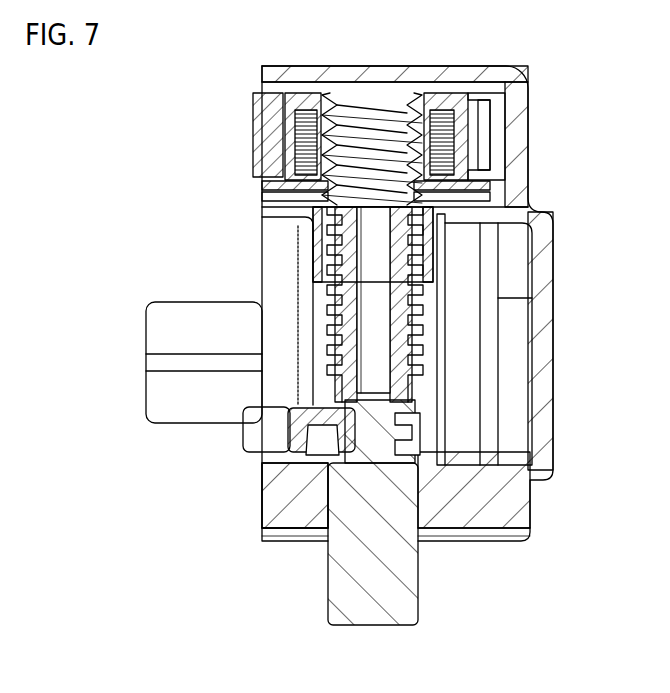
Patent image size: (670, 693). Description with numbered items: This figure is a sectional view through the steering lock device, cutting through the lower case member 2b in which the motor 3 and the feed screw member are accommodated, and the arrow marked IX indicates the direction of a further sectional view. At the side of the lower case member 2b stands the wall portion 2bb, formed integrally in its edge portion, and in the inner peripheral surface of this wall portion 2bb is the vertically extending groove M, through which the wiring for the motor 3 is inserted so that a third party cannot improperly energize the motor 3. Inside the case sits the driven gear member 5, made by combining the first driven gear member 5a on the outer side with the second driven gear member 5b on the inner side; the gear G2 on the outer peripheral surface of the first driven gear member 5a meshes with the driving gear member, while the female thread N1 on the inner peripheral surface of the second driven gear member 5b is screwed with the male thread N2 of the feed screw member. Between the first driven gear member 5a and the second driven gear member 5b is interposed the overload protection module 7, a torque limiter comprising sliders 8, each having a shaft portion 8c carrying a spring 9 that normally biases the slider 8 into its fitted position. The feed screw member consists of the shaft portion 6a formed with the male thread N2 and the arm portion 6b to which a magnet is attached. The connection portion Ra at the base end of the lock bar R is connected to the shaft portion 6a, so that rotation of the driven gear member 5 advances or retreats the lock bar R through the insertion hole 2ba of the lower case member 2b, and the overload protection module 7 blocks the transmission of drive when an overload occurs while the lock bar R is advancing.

The lower case member 2b is at (545, 302).
The insertion hole 2ba is at (330, 506).
The wall portion 2bb is at (157, 330).
The groove M is at (173, 368).
The motor 3 is at (282, 263).
The driven gear member 5 is at (263, 95).
The first driven gear member 5a is at (268, 118).
The second driven gear member 5b is at (430, 245).
The shaft portion 6a is at (400, 350).
The arm portion 6b is at (253, 443).
The overload protection module 7 is at (305, 105).
The slider 8 is at (389, 136).
The shaft portion 8c is at (283, 140).
The spring 9 is at (278, 180).
The gear G2 is at (497, 110).
The female thread N1 is at (397, 105).
The male thread N2 is at (417, 325).
The lock bar R is at (337, 585).
The connection portion Ra is at (395, 447).
The section view indicator IX is at (440, 594).